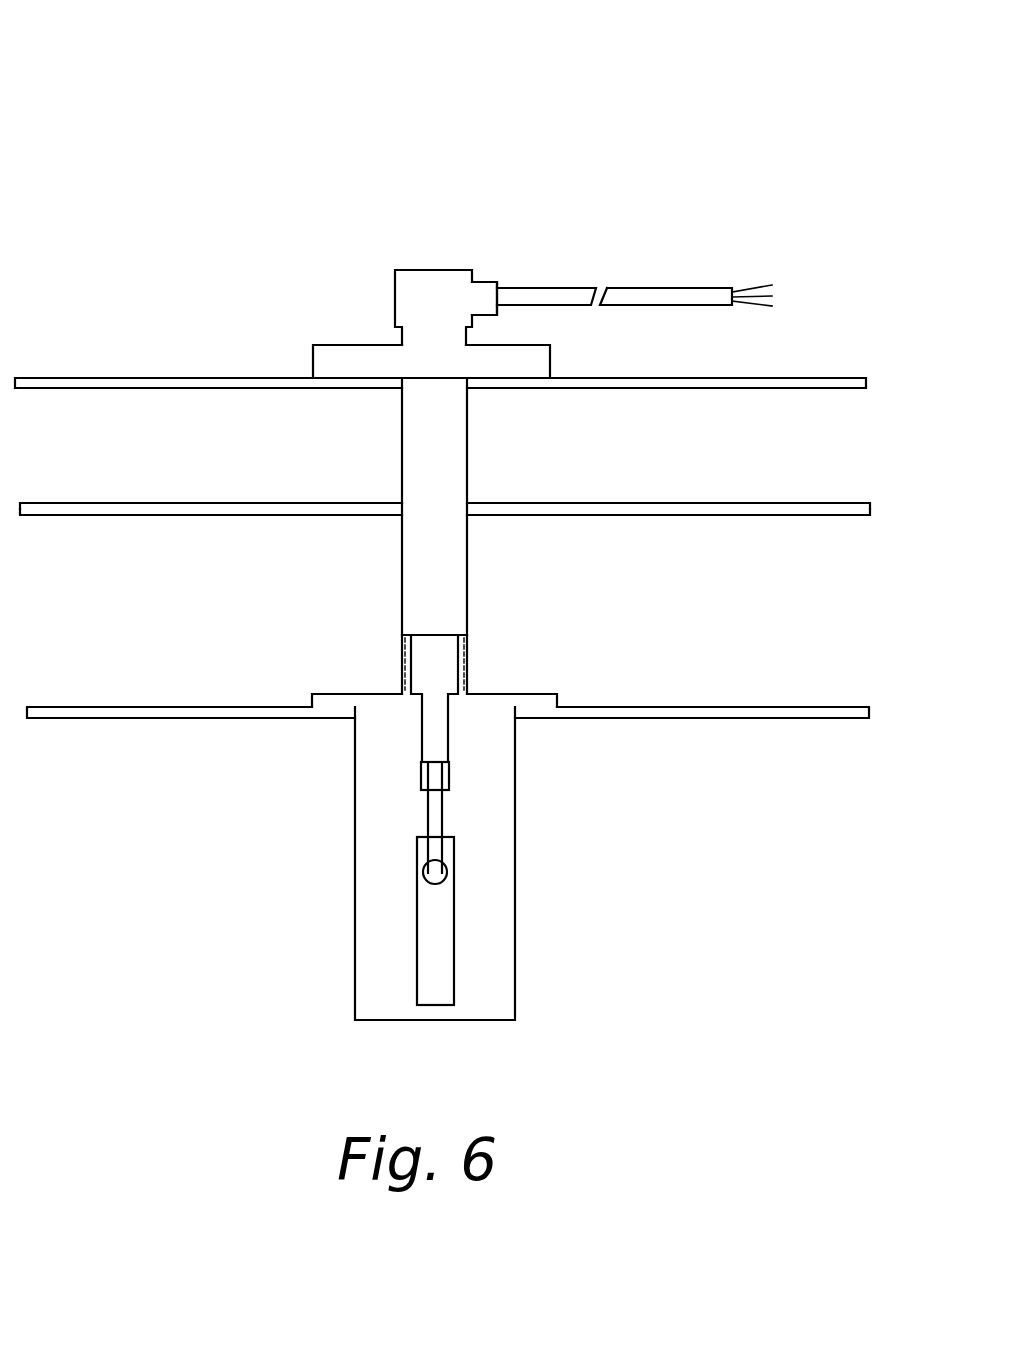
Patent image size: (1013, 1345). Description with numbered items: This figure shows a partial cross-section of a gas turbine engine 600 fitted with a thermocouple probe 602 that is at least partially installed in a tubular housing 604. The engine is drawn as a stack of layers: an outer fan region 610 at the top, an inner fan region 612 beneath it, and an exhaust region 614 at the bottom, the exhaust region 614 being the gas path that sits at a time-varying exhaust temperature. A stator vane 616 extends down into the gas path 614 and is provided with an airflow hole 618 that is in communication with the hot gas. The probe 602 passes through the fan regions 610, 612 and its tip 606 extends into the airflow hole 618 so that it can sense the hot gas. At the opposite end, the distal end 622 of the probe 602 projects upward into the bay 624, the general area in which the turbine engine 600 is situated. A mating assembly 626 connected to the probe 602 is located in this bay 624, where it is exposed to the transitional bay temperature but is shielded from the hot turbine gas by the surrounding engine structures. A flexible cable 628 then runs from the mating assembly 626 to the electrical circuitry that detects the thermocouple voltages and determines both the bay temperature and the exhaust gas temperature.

The gas turbine engine 600 is at (165, 160).
The thermocouple probe 602 is at (447, 665).
The tubular housing 604 is at (457, 542).
The tip 606 is at (435, 807).
The outer fan region 610 is at (166, 463).
The inner fan region 612 is at (166, 596).
The exhaust region 614 is at (166, 814).
The stator vane 616 is at (493, 955).
The airflow hole 618 is at (447, 868).
The distal end 622 is at (400, 250).
The bay 624 is at (166, 339).
The mating assembly 626 is at (442, 282).
The flexible cable 628 is at (553, 288).